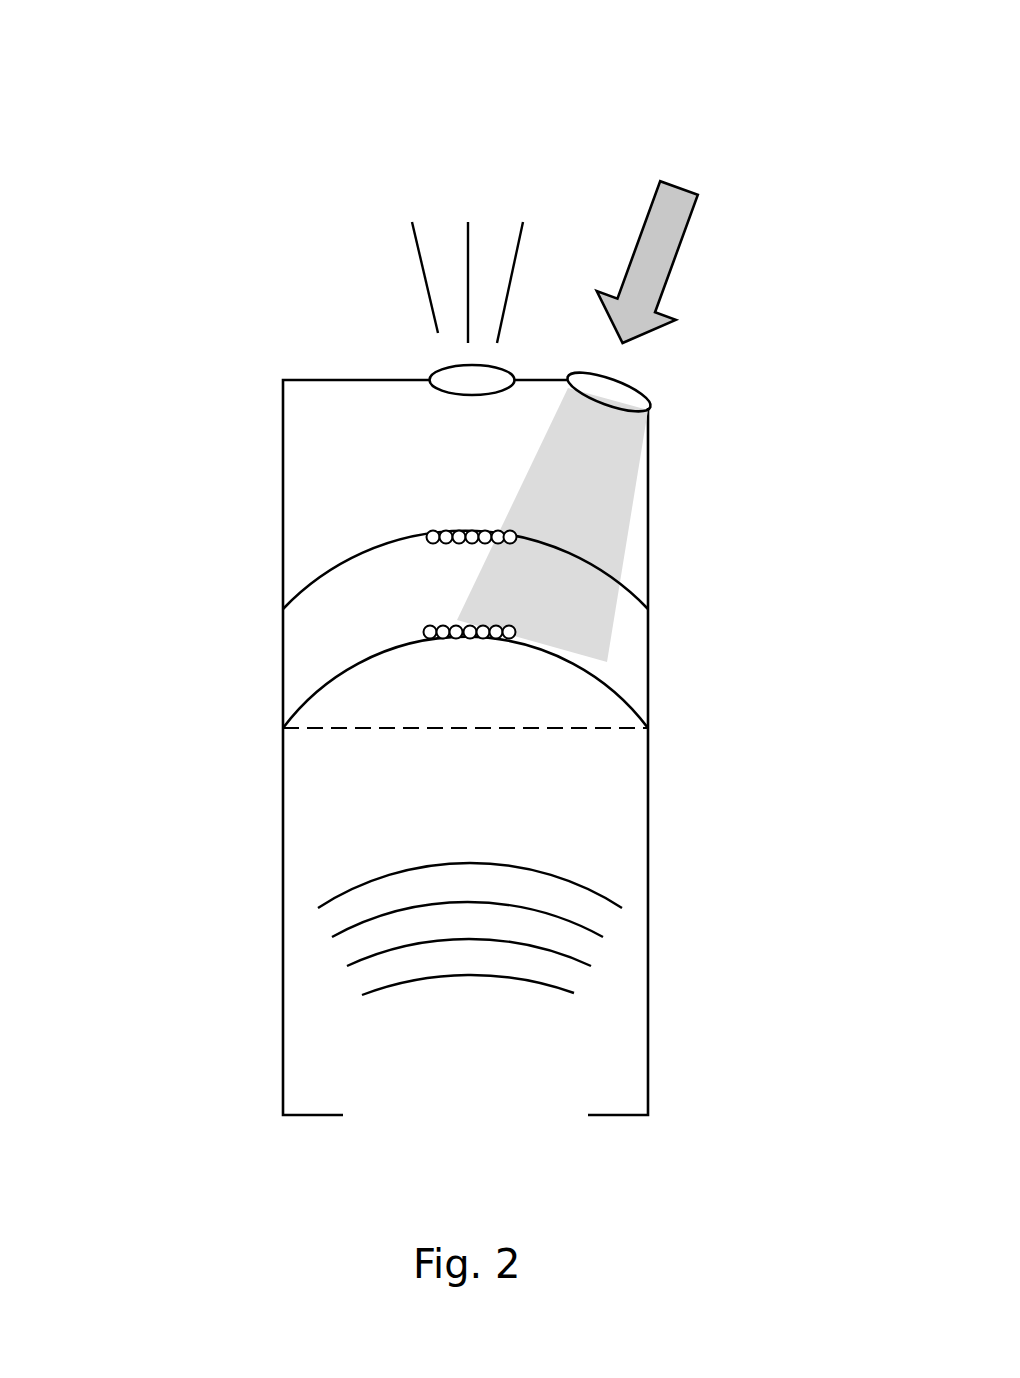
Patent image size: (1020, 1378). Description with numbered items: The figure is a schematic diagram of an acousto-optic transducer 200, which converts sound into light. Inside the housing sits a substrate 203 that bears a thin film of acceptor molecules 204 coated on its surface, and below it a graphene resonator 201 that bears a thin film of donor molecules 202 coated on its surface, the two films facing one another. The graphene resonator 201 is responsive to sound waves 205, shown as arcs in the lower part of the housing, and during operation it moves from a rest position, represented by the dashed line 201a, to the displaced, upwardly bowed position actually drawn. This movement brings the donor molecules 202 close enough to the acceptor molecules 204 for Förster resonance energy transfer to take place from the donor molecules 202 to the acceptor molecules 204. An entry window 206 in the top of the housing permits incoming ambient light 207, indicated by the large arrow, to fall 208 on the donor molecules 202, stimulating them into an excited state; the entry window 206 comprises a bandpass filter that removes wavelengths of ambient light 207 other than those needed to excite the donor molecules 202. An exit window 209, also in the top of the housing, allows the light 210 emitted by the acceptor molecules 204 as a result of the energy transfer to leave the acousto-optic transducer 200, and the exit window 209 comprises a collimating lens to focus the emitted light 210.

The acousto-optic transducer 200 is at (195, 1044).
The graphene resonator 201 is at (323, 676).
The dashed line 201a is at (340, 730).
The donor molecules 202 is at (497, 637).
The substrate 203 is at (327, 565).
The acceptor molecules 204 is at (429, 530).
The sound waves 205 is at (530, 985).
The entry window 206 is at (627, 412).
The ambient light 207 is at (687, 260).
The falling of light 208 is at (578, 482).
The exit window 209 is at (502, 368).
The emitted light 210 is at (398, 275).